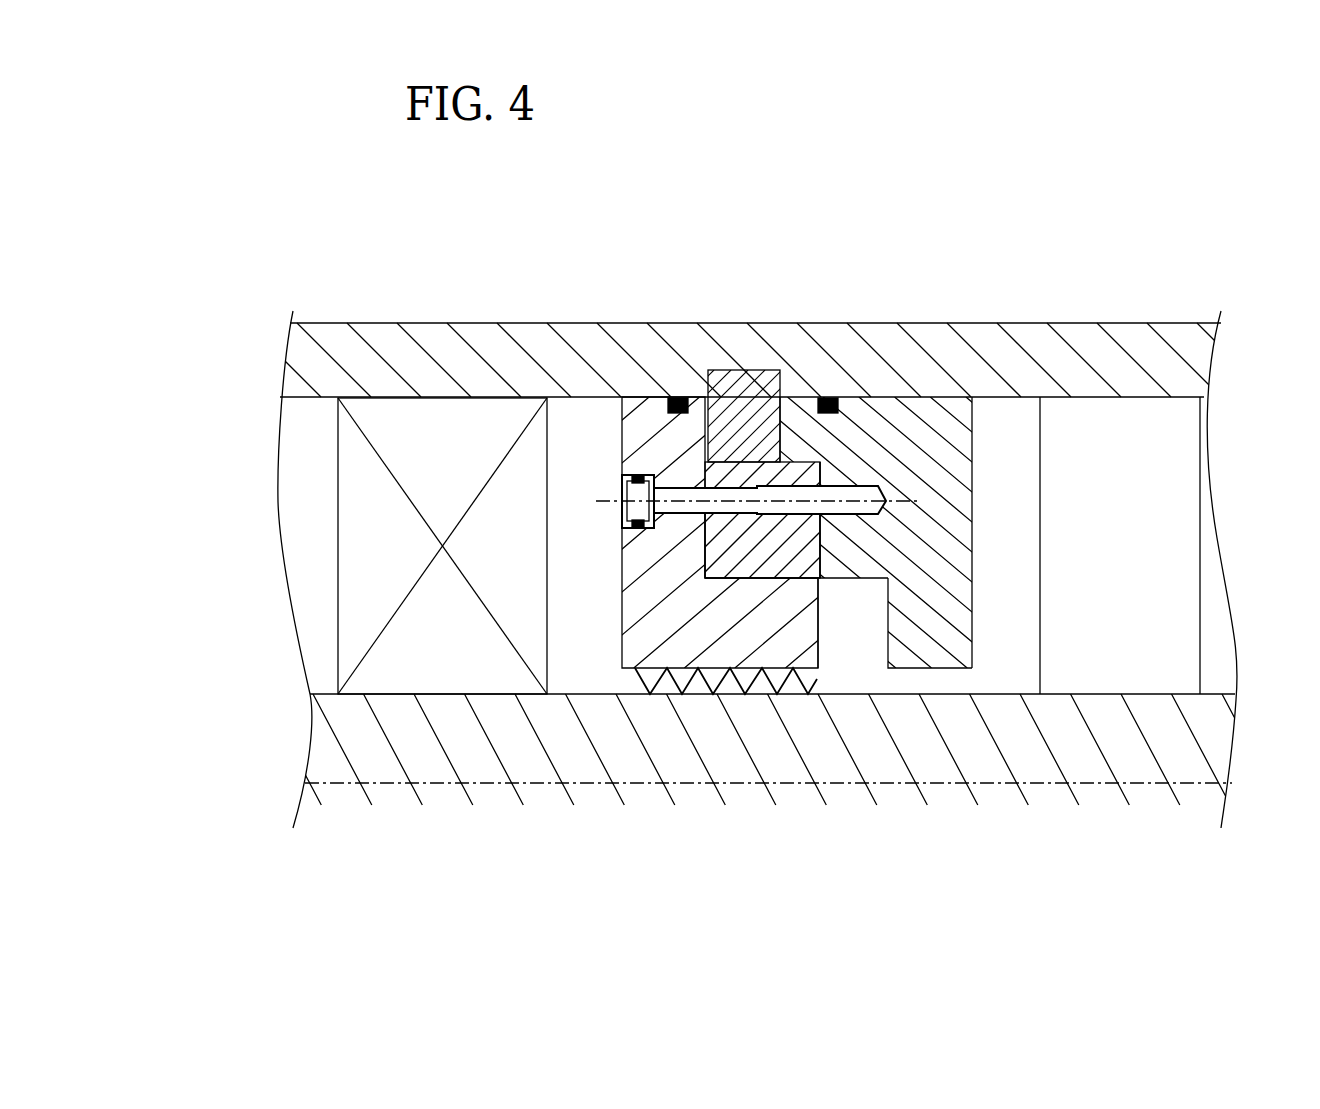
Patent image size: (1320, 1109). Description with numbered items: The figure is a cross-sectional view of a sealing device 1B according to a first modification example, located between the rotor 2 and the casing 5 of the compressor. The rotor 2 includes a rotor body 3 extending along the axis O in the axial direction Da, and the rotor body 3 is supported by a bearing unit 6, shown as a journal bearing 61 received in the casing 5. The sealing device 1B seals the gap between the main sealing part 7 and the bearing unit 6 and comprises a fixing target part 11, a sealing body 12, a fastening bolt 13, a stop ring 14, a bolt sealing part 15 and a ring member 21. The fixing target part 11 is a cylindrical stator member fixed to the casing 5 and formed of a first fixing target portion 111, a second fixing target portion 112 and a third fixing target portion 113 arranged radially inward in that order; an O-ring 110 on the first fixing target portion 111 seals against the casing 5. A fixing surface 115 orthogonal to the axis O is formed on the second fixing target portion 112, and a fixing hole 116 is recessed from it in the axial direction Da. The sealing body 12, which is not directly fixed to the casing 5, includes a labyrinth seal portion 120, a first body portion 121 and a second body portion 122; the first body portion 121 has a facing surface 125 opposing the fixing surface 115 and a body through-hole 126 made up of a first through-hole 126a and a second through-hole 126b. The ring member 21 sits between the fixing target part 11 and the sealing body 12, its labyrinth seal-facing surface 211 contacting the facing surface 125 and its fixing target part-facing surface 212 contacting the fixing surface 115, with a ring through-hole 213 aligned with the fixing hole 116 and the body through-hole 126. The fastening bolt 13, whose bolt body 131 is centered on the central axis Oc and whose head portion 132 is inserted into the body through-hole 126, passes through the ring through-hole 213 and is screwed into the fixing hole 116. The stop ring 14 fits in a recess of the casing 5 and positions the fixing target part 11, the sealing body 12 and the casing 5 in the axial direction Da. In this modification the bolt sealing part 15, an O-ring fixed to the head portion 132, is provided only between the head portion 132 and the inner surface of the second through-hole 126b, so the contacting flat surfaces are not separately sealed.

The sealing device 1B is at (592, 488).
The axial direction Da is at (648, 133).
The rotor 2 is at (704, 749).
The rotor body 3 is at (325, 728).
The casing 5 is at (300, 358).
The bearing unit 6 is at (330, 546).
The journal bearing 61 is at (357, 549).
The main sealing part 7 is at (1167, 530).
The fixing target part 11 is at (877, 545).
The O-ring 110 is at (678, 398).
The first fixing target portion 111 is at (800, 418).
The second fixing target portion 112 is at (960, 503).
The third fixing target portion 113 is at (935, 650).
The fixing surface 115 is at (820, 492).
The fixing hole 116 is at (858, 508).
The sealing body 12 is at (725, 571).
The labyrinth seal portion 120 is at (676, 680).
The first body portion 121 is at (748, 643).
The second body portion 122 is at (630, 423).
The facing surface 125 is at (655, 640).
The body through-hole 126 is at (588, 738).
The first through-hole 126a is at (632, 522).
The second through-hole 126b is at (690, 513).
The fastening bolt 13 is at (702, 343).
The bolt body 131 is at (630, 490).
The head portion 132 is at (735, 488).
The stop ring 14 is at (760, 400).
The bolt sealing part 15 is at (638, 474).
The ring member 21 is at (767, 477).
The labyrinth seal-facing surface 211 is at (707, 545).
The fixing target part-facing surface 212 is at (812, 565).
The ring through-hole 213 is at (782, 500).
The axis O is at (352, 783).
The central axis Oc is at (907, 500).